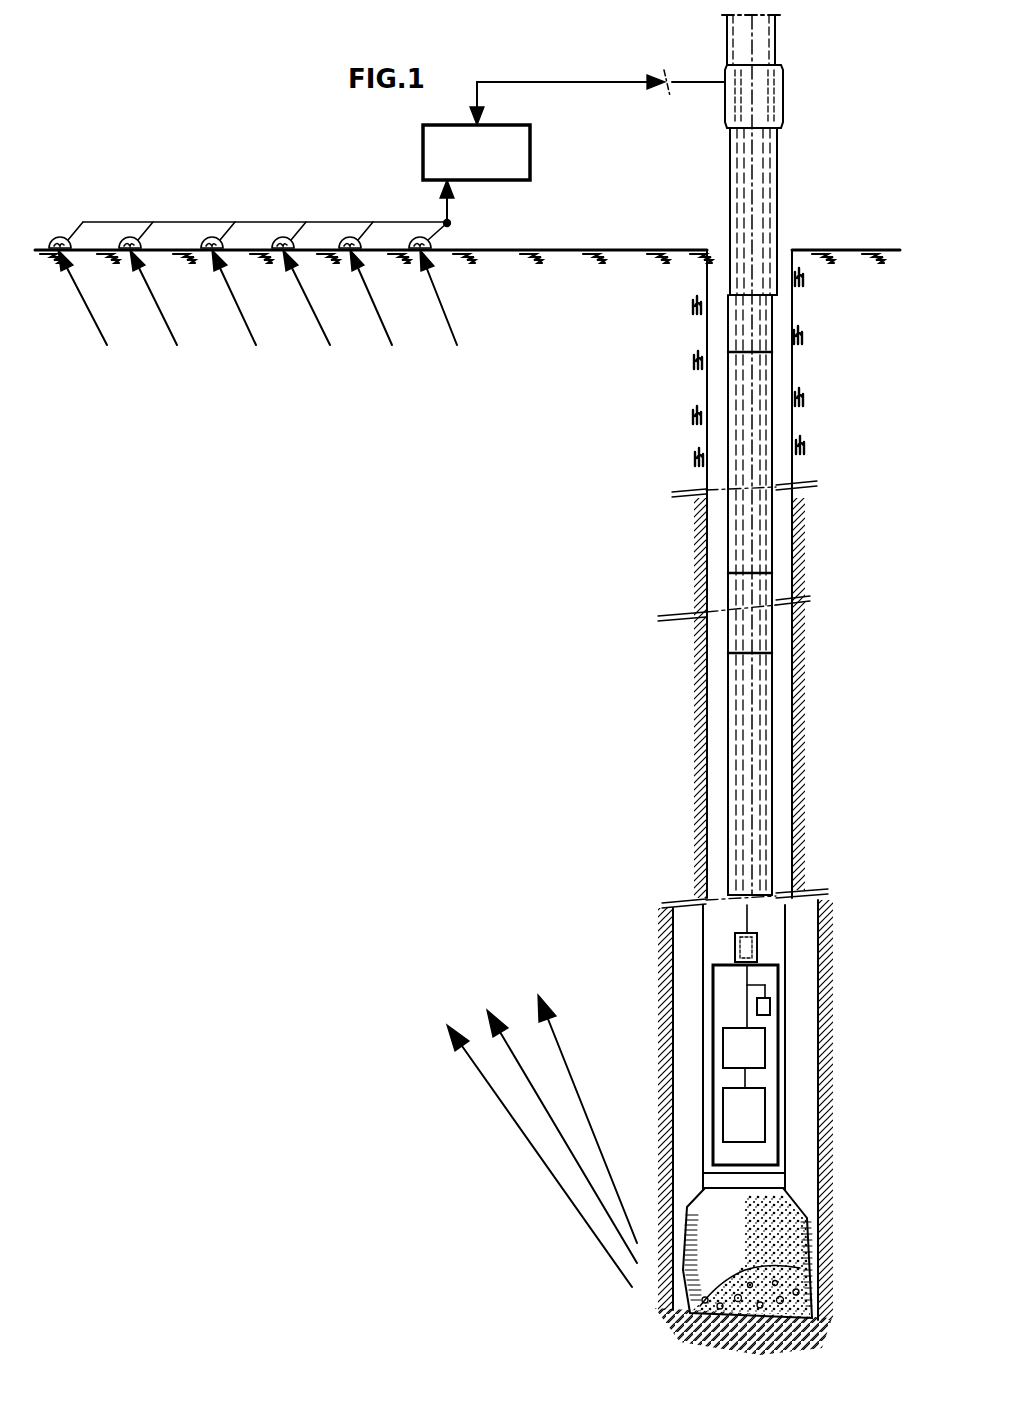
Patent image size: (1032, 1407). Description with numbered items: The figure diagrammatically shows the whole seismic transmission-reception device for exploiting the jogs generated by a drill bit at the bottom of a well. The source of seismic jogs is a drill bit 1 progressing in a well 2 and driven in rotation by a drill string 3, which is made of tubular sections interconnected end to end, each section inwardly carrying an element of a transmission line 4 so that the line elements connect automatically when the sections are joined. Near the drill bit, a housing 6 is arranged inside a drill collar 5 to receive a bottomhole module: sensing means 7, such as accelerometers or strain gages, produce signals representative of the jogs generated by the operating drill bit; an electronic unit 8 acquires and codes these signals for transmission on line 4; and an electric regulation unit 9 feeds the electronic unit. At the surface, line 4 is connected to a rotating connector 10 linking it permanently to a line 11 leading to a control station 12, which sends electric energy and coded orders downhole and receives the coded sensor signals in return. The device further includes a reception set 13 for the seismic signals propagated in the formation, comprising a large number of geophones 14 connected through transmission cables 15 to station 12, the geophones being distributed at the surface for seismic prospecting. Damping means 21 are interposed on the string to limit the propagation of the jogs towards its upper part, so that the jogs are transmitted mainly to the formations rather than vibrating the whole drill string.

The drill bit 1 is at (790, 1258).
The well 2 is at (796, 382).
The drill string 3 is at (763, 330).
The transmission line 4 is at (752, 478).
The drill collar 5 is at (786, 916).
The housing 6 is at (800, 972).
The sensing means 7 is at (757, 1106).
The electronic unit 8 is at (757, 1045).
The electric regulation unit 9 is at (770, 1007).
The rotating connector 10 is at (783, 88).
The line 11 is at (571, 82).
The control station 12 is at (491, 173).
The reception set 13 is at (192, 198).
The geophones 14 is at (58, 238).
The transmission cables 15 is at (450, 222).
The damping means 21 is at (760, 587).